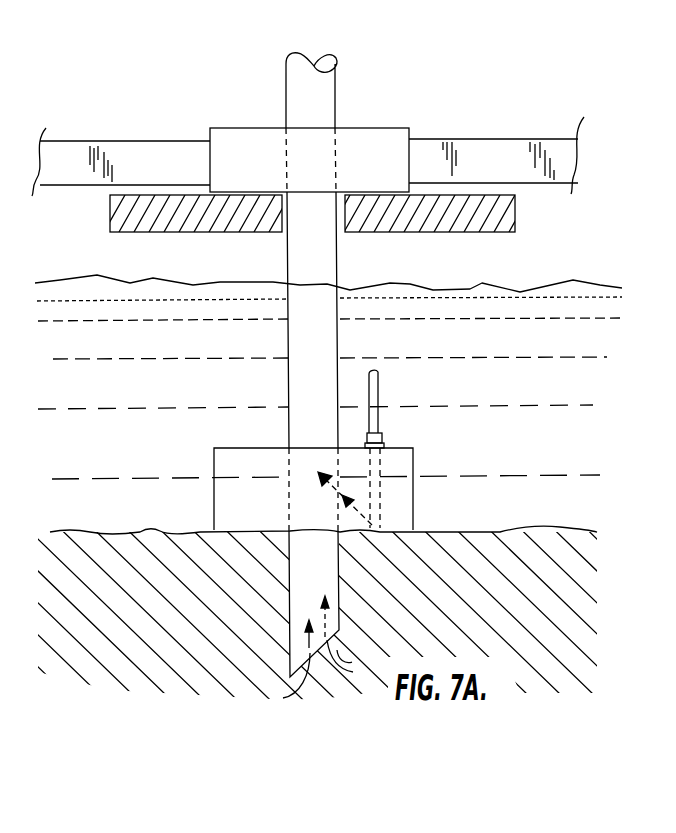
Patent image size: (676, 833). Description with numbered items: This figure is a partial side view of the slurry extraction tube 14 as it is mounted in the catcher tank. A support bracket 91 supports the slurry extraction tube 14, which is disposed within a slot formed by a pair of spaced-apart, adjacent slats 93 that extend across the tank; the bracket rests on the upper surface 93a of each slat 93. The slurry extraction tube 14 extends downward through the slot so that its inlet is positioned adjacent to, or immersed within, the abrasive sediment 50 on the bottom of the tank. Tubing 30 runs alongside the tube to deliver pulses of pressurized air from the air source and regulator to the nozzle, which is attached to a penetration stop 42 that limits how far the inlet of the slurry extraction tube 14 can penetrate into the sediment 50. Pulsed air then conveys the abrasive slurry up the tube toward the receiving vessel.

The slurry extraction tube 14 is at (330, 348).
The tubing 30 is at (380, 392).
The penetration stop 42 is at (213, 452).
The sediment 50 is at (137, 532).
The support bracket 91 is at (372, 137).
The slats 93 is at (125, 220).
The upper surface 93a is at (150, 195).